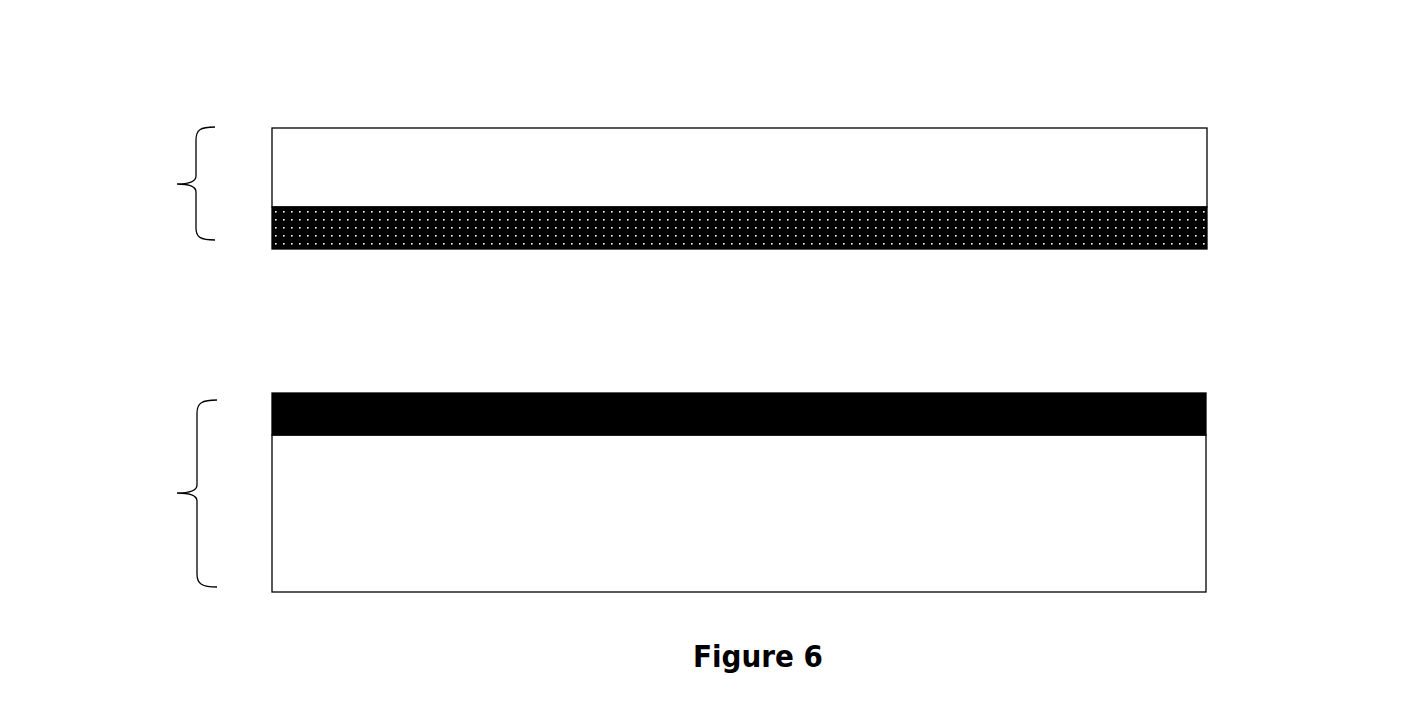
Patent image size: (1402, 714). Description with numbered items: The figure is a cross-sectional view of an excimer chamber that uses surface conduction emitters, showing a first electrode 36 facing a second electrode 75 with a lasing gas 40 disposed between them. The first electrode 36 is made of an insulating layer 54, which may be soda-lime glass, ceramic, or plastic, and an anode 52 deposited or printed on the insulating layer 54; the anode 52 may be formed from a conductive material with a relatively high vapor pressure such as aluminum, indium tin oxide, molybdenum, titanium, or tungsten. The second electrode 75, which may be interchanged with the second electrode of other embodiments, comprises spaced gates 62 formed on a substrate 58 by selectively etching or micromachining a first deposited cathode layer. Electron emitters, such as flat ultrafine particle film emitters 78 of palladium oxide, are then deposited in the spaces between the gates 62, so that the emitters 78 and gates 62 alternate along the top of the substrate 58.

The first electrode 36 is at (153, 183).
The insulating layer 54 is at (1207, 128).
The anode 52 is at (1207, 227).
The lasing gas 40 is at (985, 317).
The second electrode 75 is at (154, 493).
The substrate 58 is at (1206, 560).
The flat ultrafine particle film emitters 78 is at (337, 393).
The gates 62 is at (495, 437).